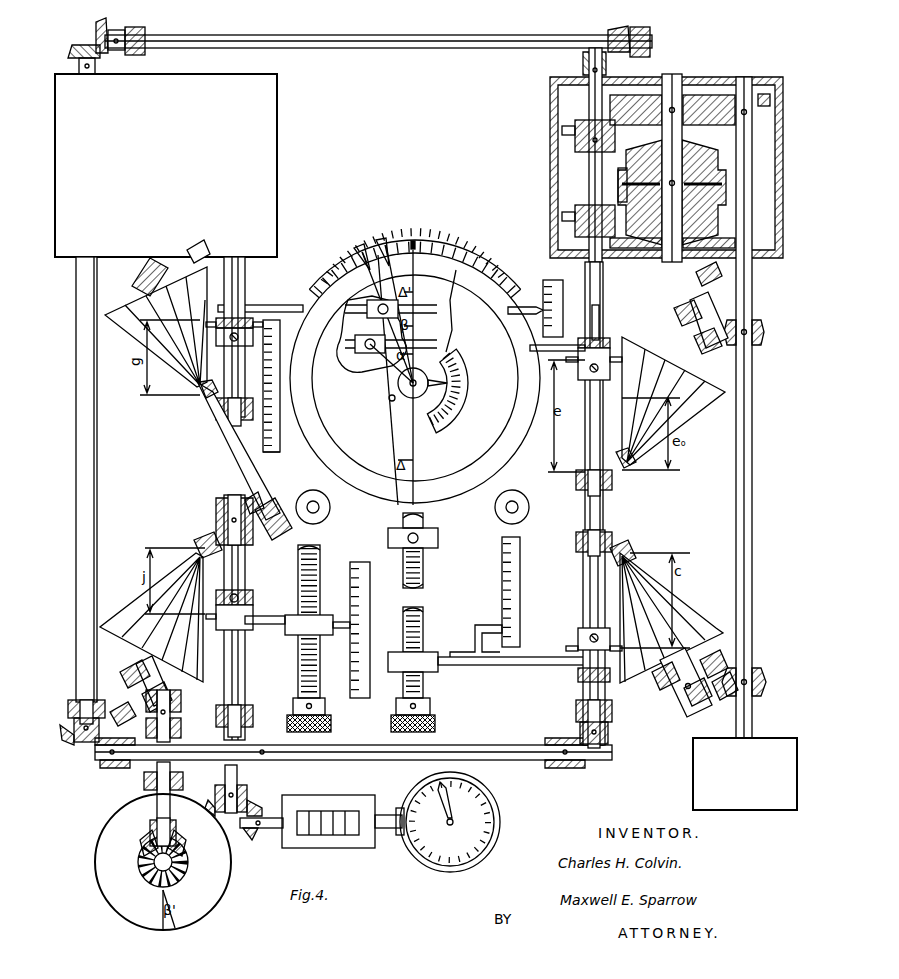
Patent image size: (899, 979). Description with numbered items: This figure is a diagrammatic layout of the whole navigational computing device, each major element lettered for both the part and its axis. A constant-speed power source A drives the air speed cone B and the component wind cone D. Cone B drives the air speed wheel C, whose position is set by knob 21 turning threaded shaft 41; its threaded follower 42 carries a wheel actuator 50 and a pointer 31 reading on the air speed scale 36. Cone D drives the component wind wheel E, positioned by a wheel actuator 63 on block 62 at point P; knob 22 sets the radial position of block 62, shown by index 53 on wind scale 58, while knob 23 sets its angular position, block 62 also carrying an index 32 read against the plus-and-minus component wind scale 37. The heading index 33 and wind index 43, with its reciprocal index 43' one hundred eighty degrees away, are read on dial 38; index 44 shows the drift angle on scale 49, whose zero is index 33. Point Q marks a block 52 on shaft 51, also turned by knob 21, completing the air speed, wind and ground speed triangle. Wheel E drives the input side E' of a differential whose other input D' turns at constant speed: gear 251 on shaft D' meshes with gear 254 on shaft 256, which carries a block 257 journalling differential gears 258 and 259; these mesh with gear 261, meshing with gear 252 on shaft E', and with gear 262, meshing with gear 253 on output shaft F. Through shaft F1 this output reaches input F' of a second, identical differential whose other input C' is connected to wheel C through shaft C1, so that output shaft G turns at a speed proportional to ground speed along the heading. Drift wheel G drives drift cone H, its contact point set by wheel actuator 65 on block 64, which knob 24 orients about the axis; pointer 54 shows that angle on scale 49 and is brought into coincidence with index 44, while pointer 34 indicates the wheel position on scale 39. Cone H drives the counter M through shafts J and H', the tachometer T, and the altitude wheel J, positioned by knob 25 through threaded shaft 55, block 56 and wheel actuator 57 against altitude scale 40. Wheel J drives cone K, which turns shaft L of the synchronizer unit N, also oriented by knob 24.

The shaft F1 is at (369, 43).
The input side F' is at (97, 65).
The output shaft F is at (365, 52).
The gear 253 is at (552, 127).
The input shaft E' is at (607, 163).
The gear 262 is at (636, 110).
The gear 254 is at (709, 110).
The block 257 is at (624, 166).
The differential gear 259 is at (620, 190).
The differential gear 258 is at (711, 192).
The gear 261 is at (718, 250).
The gear 252 is at (558, 230).
The shaft 256 is at (668, 76).
The gear 251 is at (770, 100).
The input shaft D' is at (750, 407).
The dial 38 is at (505, 462).
The index 43 is at (415, 356).
The scale 49 is at (470, 250).
The index 33 is at (414, 240).
The index 43' is at (456, 377).
The knob 22 is at (408, 393).
The index 53 is at (437, 373).
The scale 58 is at (466, 360).
The index 44 is at (392, 299).
The pointer 54 is at (376, 301).
The block 64 is at (391, 300).
The point P is at (391, 336).
The block 62 is at (382, 363).
The index 32 is at (280, 340).
The scale 37 is at (270, 452).
The scale 39 is at (553, 299).
The pointer 34 is at (525, 302).
The scale 40 is at (372, 562).
The scale 36 is at (520, 556).
The wheel actuator 65 is at (260, 298).
The drift wheel G is at (234, 348).
The drift cone H is at (198, 400).
The input side C' is at (85, 508).
The component wind wheel E is at (594, 503).
The wheel actuator 63 is at (566, 345).
The component wind cone D is at (671, 377).
The knob 24 is at (320, 508).
The knob 23 is at (498, 514).
The movable block 52 is at (430, 530).
The shaft 51 is at (423, 578).
The point Q is at (418, 540).
The threaded shaft 41 is at (423, 620).
The threaded follower 42 is at (425, 652).
The knob 21 is at (436, 720).
The threaded shaft 55 is at (298, 664).
The block 56 is at (290, 615).
The knob 25 is at (331, 722).
The wheel actuator 50 is at (508, 666).
The pointer 31 is at (496, 624).
The altitude wheel J is at (235, 611).
The wheel actuator 57 is at (256, 630).
The cone K is at (161, 623).
The shaft L is at (163, 748).
The shaft C1 is at (344, 762).
The air speed wheel C is at (594, 638).
The air speed cone B is at (674, 628).
The power source A is at (760, 738).
The synchronizer unit N is at (150, 880).
The shaft H' is at (244, 802).
The counter M is at (326, 792).
The tachometer T is at (486, 790).